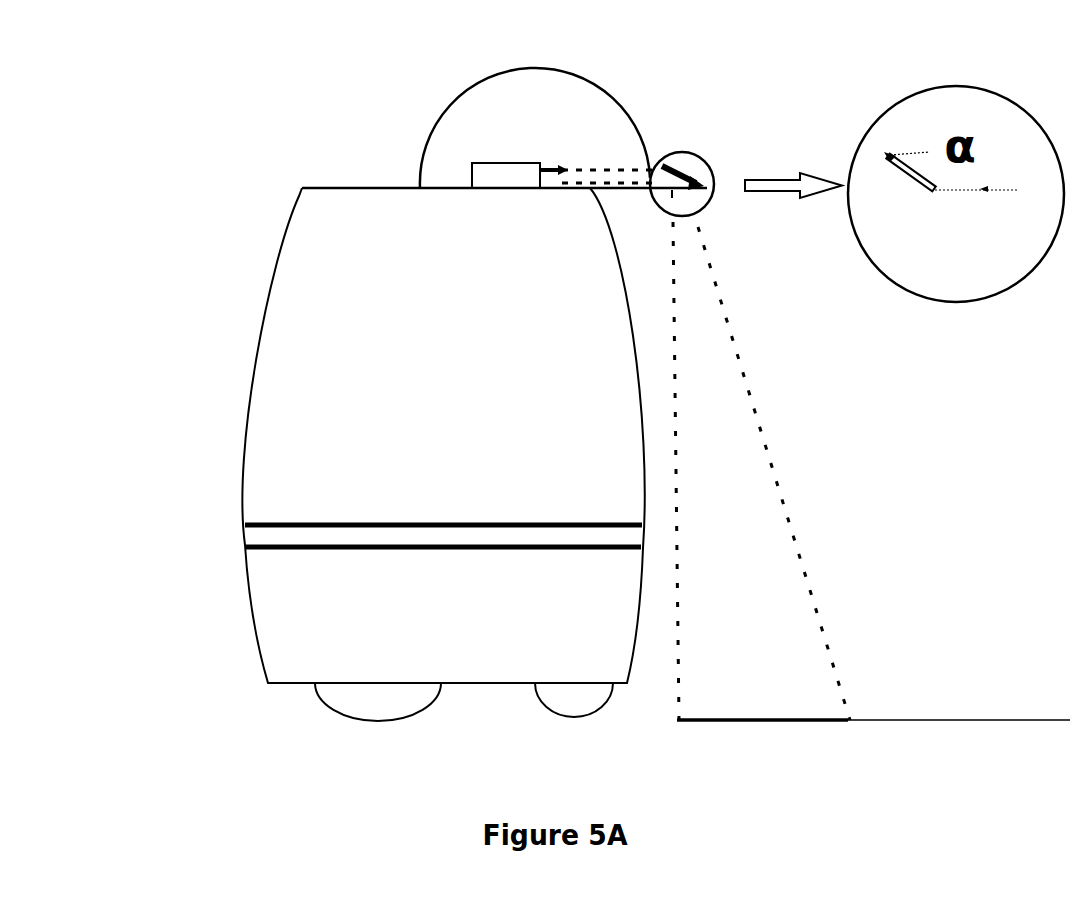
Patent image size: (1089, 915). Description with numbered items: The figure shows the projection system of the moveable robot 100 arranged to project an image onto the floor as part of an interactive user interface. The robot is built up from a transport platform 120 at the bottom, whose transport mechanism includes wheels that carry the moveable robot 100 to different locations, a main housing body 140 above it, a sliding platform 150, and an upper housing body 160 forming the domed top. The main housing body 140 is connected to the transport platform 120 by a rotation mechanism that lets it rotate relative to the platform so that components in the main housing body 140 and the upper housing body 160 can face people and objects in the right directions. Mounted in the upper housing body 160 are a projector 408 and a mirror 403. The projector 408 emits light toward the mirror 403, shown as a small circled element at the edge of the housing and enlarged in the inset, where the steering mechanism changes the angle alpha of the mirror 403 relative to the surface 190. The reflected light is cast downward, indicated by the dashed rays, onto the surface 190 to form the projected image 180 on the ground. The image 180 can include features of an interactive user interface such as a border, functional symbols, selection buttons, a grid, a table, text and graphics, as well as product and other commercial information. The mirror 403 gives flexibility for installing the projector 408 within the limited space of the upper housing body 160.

The moveable robot 100 is at (268, 268).
The transport platform 120 is at (250, 587).
The main housing body 140 is at (307, 418).
The sliding platform 150 is at (355, 187).
The upper housing body 160 is at (585, 118).
The image 180 is at (762, 720).
The surface 190 is at (980, 720).
The mirror 403 is at (675, 162).
The projector 408 is at (513, 178).